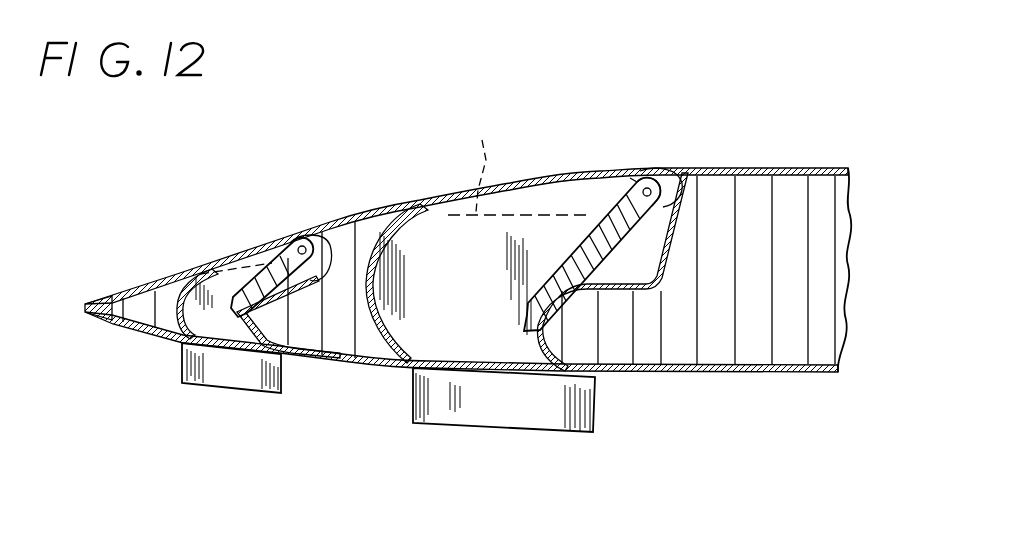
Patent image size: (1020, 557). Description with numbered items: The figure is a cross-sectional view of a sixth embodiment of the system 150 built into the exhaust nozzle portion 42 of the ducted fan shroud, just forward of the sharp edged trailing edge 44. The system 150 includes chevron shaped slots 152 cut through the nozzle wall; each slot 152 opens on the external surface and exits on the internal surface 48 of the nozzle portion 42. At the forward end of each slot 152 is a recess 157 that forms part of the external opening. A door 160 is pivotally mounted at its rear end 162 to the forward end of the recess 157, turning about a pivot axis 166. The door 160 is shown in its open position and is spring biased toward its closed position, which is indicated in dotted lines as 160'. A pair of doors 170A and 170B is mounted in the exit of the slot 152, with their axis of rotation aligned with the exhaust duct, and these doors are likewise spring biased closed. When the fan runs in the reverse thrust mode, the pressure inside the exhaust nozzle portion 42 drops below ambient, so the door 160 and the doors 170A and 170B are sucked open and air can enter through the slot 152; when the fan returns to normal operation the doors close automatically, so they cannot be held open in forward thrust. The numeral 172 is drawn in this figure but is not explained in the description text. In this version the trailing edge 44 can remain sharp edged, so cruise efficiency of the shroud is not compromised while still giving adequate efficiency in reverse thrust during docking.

The system 150 is at (508, 78).
The exhaust nozzle portion 42 is at (790, 162).
The trailing edge 44 is at (727, 168).
The internal surface 48 is at (758, 378).
The chevron shaped slot 152 is at (478, 284).
The recess 157 is at (633, 262).
The door 160 is at (540, 257).
The door closed position 160' is at (518, 162).
The rear end of door 162 is at (652, 172).
The pivot axis 166 is at (640, 180).
The door 170A is at (293, 429).
The door 170B is at (487, 432).
The pivoting lever 172 is at (240, 236).